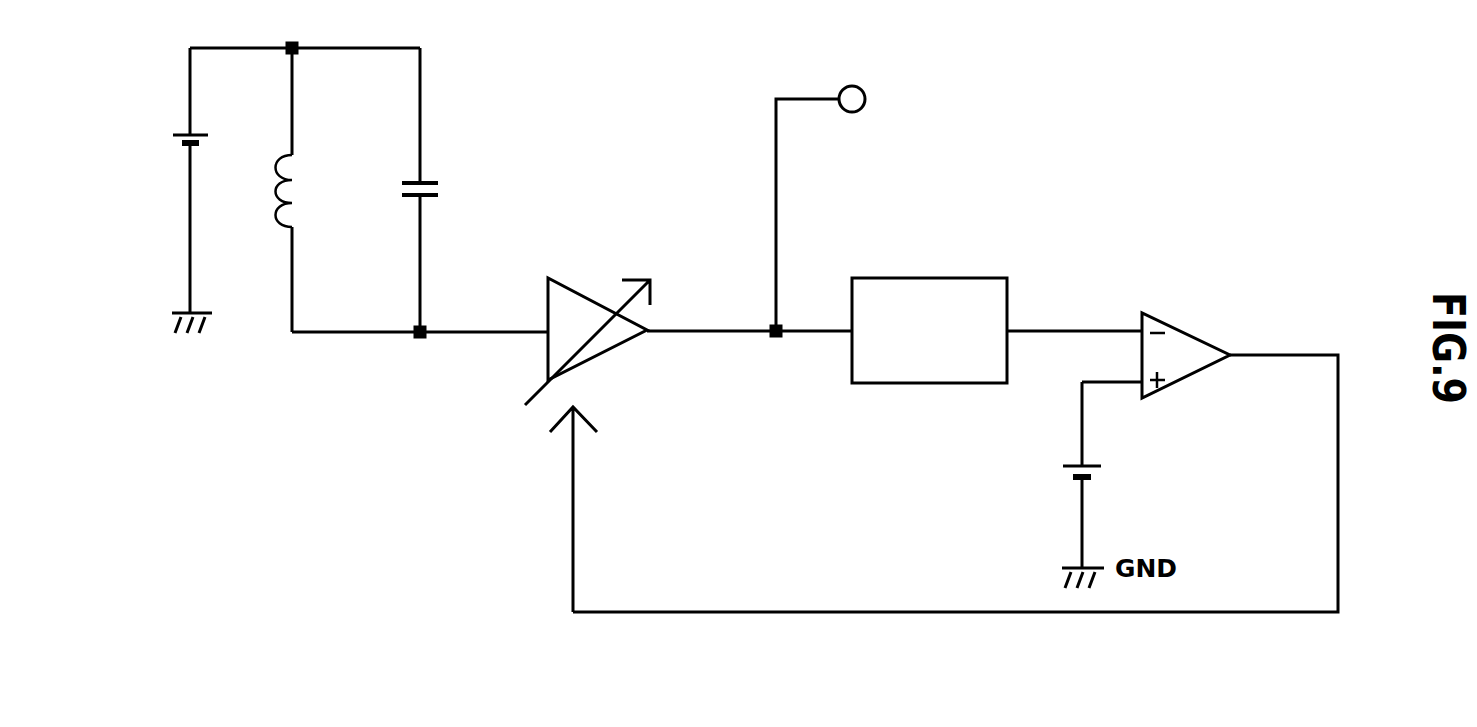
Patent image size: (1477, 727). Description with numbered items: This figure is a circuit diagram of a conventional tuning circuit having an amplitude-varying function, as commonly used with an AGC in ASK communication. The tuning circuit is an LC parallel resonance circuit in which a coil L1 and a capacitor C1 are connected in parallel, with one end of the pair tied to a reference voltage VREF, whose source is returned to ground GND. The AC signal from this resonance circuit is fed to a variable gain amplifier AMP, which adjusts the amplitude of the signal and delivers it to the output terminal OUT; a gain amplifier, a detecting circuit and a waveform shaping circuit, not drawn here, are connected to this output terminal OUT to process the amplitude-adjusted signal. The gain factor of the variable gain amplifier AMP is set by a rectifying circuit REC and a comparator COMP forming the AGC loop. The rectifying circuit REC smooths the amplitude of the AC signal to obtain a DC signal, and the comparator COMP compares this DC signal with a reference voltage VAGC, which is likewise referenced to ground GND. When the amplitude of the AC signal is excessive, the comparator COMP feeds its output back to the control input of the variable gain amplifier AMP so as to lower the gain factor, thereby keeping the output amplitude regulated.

The reference voltage VREF is at (155, 180).
The ground GND is at (227, 315).
The coil L1 is at (316, 190).
The capacitor C1 is at (442, 190).
The variable gain amplifier AMP is at (626, 445).
The output terminal OUT is at (855, 208).
The rectifying circuit REC is at (929, 330).
The comparator COMP is at (955, 462).
The reference voltage VAGC is at (1049, 475).